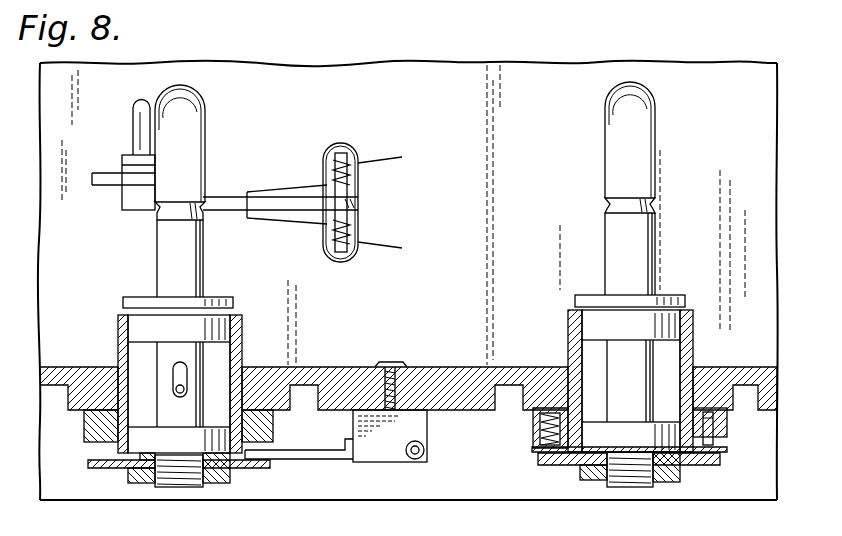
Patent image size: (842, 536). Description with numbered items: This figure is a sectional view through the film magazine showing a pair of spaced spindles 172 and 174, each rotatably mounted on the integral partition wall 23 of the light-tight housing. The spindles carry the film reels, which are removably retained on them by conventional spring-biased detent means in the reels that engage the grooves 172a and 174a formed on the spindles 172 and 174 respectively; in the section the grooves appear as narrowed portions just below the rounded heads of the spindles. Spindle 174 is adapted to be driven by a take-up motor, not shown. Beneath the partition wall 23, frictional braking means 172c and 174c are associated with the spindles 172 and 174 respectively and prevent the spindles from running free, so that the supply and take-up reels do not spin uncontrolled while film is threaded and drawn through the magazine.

The partition wall 23 is at (483, 367).
The spindle 172 is at (205, 132).
The groove 172a is at (153, 217).
The frictional braking means 172c is at (273, 470).
The spindle 174 is at (605, 138).
The groove 174a is at (653, 207).
The frictional braking means 174c is at (520, 442).